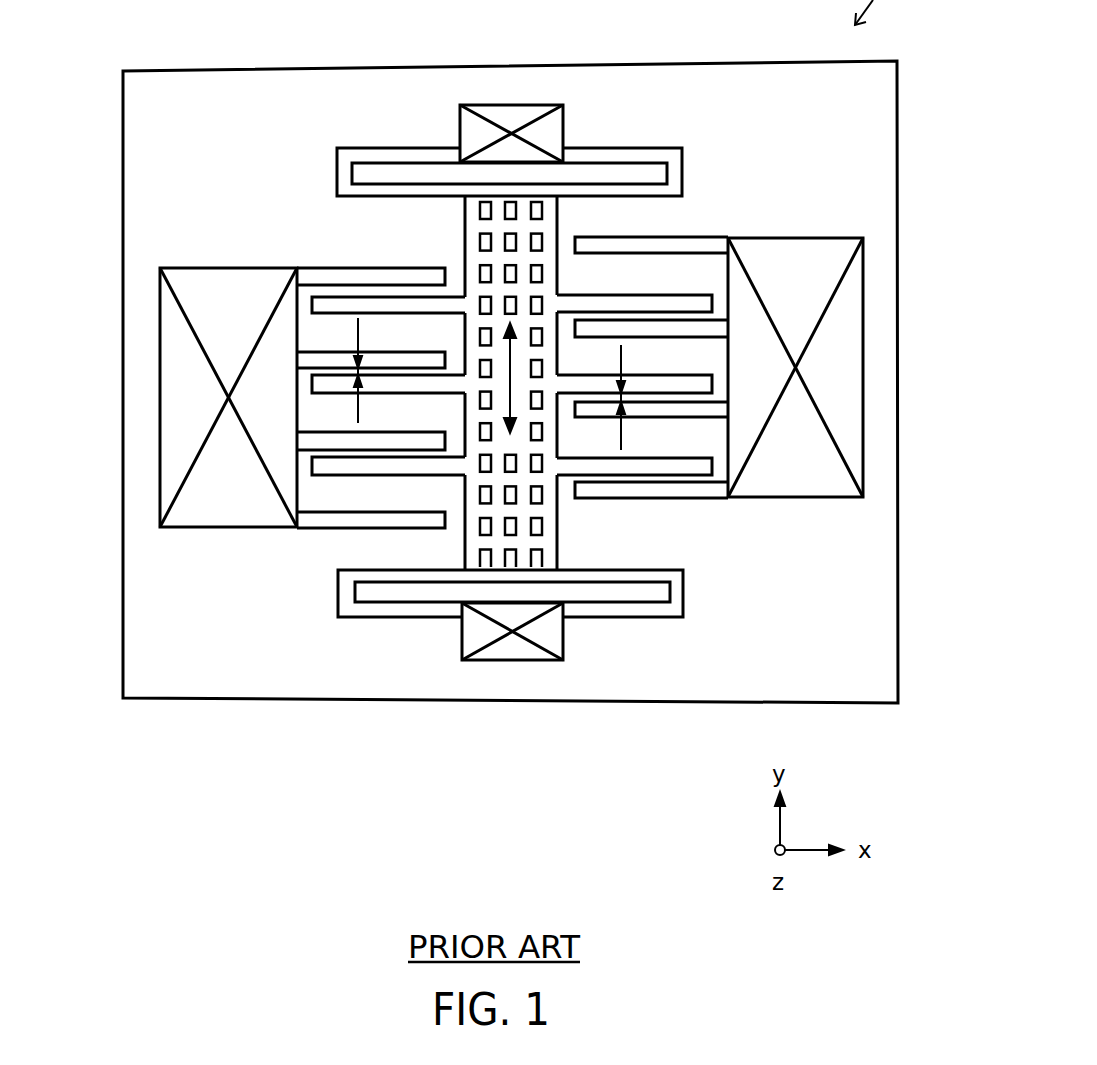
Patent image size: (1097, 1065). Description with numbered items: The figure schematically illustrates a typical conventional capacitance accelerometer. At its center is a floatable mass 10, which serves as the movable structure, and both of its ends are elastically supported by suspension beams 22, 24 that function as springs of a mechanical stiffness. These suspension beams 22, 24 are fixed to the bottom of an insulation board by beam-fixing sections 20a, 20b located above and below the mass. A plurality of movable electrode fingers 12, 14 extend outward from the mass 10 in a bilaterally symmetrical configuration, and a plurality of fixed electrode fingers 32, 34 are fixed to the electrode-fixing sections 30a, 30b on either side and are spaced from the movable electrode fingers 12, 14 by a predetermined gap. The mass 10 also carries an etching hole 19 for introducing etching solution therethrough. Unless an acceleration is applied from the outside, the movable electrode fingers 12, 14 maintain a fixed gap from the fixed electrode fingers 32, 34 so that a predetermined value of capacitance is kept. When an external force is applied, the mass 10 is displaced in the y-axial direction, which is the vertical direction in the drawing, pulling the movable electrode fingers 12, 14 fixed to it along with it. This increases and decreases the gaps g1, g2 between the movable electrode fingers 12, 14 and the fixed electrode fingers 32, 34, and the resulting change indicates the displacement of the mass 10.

The floatable mass 10 is at (550, 222).
The movable electrode fingers 12 is at (428, 385).
The movable electrode fingers 14 is at (678, 383).
The etching hole 19 is at (508, 297).
The beam-fixing section 20a is at (530, 107).
The beam-fixing section 20b is at (507, 652).
The suspension beam 22 is at (358, 157).
The suspension beam 24 is at (652, 608).
The electrode-fixing section 30a is at (168, 333).
The electrode-fixing section 30b is at (833, 243).
The fixed electrode fingers 32 is at (352, 442).
The fixed electrode fingers 34 is at (663, 330).
The gap g1 is at (343, 370).
The gap g2 is at (637, 395).